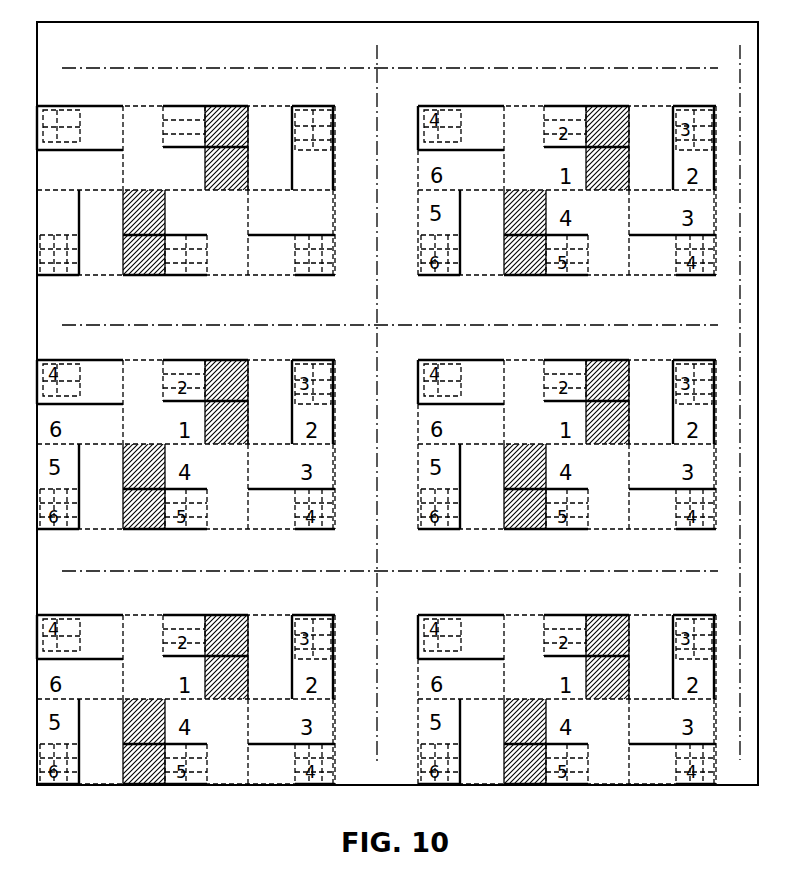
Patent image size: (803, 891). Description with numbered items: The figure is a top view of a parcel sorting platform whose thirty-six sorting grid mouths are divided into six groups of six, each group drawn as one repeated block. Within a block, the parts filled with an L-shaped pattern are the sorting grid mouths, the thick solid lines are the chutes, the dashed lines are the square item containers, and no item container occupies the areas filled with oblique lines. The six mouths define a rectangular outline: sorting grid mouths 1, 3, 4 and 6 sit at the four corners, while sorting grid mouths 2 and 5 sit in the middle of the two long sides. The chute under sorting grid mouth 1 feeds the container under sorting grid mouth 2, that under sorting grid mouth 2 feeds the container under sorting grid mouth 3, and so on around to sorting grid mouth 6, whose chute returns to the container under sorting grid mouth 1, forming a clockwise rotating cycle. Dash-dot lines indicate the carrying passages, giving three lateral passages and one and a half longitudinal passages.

The sorting grid mouth 1 is at (205, 148).
The sorting grid mouth 2 is at (313, 148).
The sorting grid mouth 3 is at (291, 232).
The sorting grid mouth 4 is at (165, 232).
The sorting grid mouth 5 is at (58, 232).
The sorting grid mouth 6 is at (80, 190).